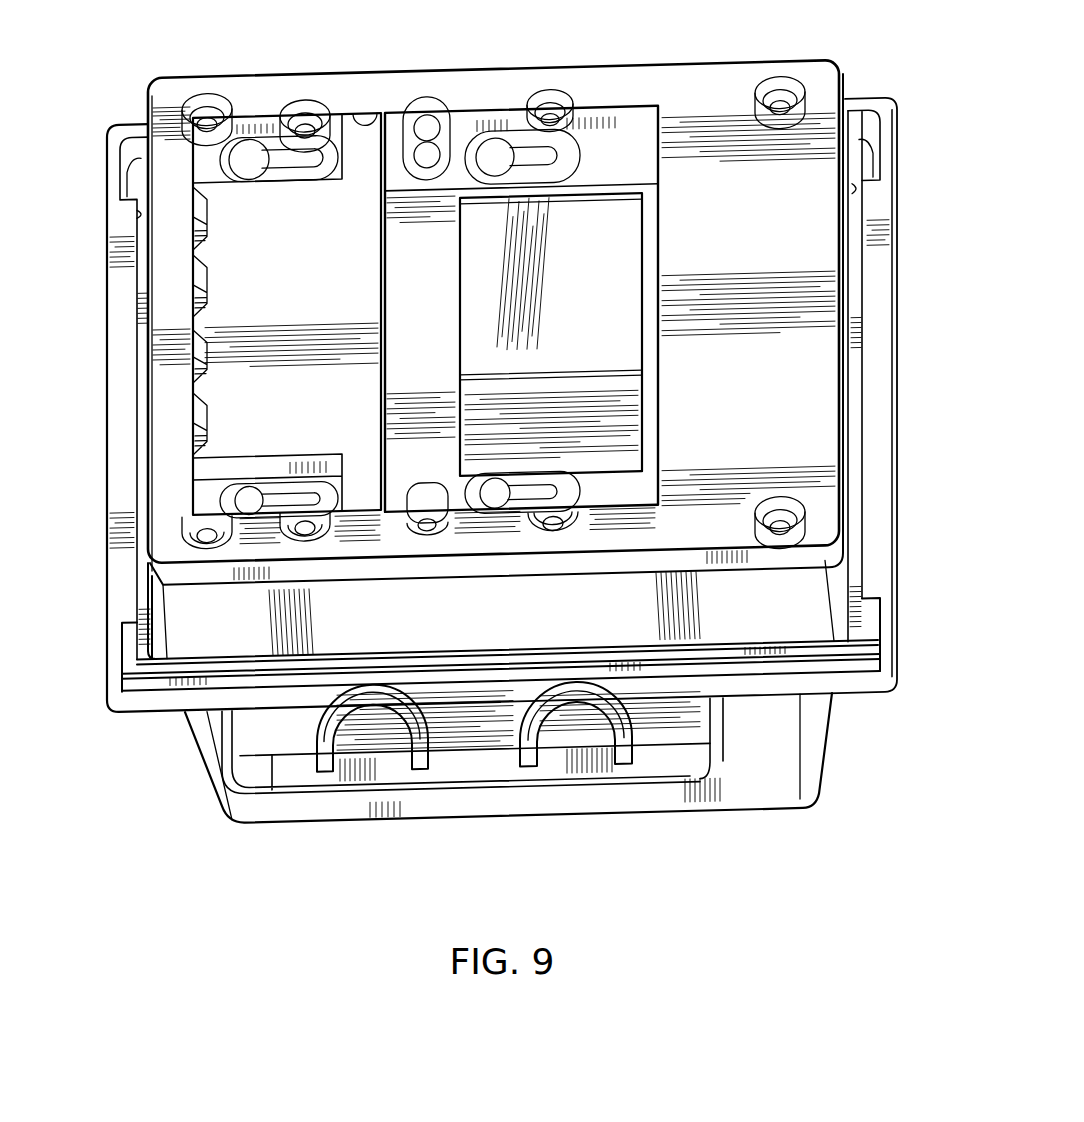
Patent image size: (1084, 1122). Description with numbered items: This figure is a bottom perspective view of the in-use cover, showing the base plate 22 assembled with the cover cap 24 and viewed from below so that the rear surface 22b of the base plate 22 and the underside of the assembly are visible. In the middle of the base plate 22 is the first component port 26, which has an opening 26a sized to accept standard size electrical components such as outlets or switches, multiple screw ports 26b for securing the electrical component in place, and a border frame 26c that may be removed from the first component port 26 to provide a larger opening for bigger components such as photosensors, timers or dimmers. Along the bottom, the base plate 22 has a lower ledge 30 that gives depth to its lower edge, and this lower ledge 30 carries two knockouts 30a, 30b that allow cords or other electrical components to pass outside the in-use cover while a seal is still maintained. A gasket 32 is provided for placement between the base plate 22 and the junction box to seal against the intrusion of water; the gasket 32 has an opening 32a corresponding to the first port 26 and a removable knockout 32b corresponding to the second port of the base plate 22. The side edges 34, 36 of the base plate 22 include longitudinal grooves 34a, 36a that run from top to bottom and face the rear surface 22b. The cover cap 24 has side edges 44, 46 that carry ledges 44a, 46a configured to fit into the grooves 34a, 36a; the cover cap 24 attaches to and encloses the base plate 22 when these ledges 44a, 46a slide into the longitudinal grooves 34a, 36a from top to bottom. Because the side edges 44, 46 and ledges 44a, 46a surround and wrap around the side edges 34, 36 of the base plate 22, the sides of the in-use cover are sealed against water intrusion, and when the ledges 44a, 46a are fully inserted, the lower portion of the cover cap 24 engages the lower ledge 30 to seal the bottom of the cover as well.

The base plate 22 is at (800, 607).
The rear surface 22b is at (605, 501).
The cover cap 24 is at (760, 785).
The first component port 26 is at (632, 343).
The opening 26a is at (608, 196).
The screw ports 26b is at (468, 133).
The border frame 26c is at (398, 304).
The lower ledge 30 is at (475, 740).
The knockout 30a is at (373, 742).
The knockout 30b is at (567, 733).
The gasket 32 is at (715, 77).
The opening 32a is at (652, 232).
The removable knockout 32b is at (272, 266).
The side edge 34 is at (132, 645).
The longitudinal groove 34a is at (147, 583).
The side edge 36 is at (870, 623).
The longitudinal groove 36a is at (855, 263).
The side edge 44 is at (107, 338).
The ledge 44a is at (142, 215).
The side edge 46 is at (897, 287).
The ledge 46a is at (857, 187).